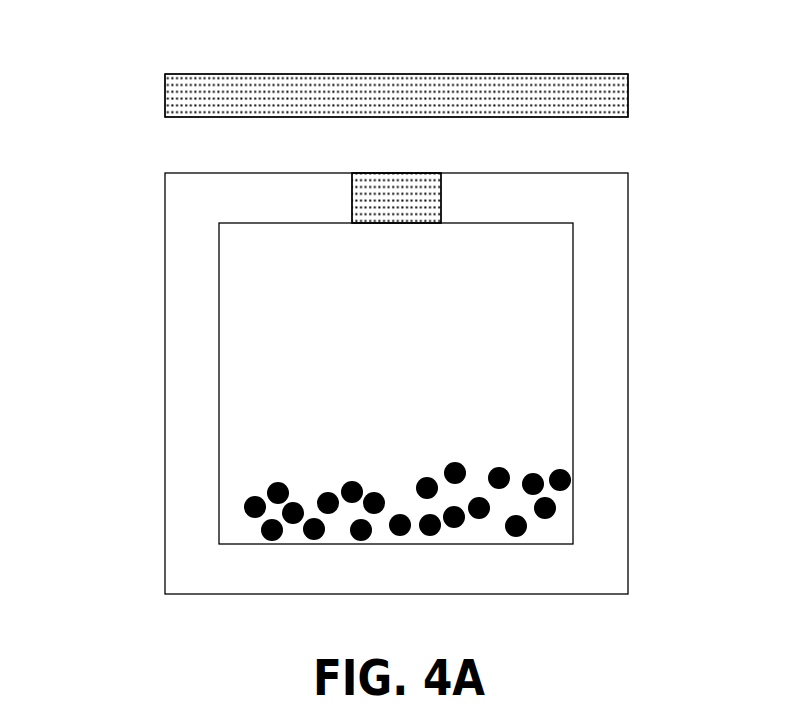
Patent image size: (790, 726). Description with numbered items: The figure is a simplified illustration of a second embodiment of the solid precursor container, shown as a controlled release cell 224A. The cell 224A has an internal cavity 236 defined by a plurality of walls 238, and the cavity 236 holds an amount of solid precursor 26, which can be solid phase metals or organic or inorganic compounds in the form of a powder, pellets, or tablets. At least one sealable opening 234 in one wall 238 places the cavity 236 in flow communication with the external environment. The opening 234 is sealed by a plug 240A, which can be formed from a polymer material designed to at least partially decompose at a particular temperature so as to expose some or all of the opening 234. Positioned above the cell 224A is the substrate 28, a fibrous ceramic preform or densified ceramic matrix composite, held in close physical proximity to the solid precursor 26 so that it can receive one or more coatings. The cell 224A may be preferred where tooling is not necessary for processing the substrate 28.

The substrate 28 is at (628, 101).
The controlled release cell 224A is at (135, 194).
The walls 238 is at (628, 338).
The internal cavity 236 is at (413, 366).
The sealable opening 234 is at (352, 196).
The plug 240A is at (403, 210).
The solid precursor 26 is at (528, 472).